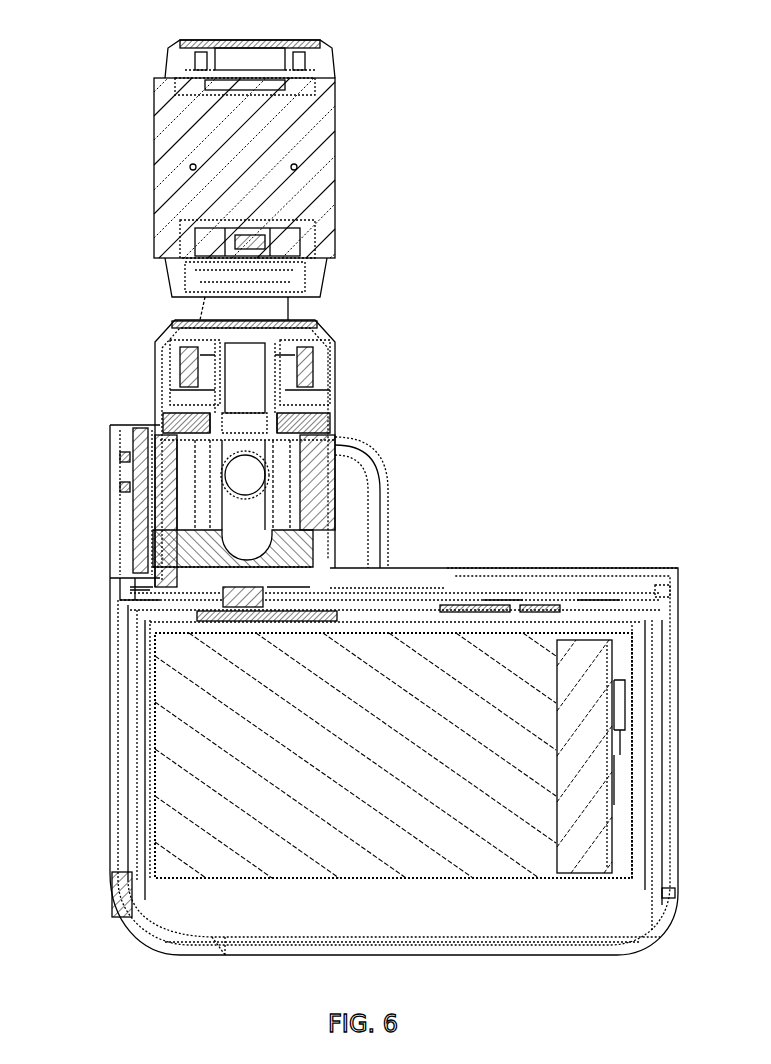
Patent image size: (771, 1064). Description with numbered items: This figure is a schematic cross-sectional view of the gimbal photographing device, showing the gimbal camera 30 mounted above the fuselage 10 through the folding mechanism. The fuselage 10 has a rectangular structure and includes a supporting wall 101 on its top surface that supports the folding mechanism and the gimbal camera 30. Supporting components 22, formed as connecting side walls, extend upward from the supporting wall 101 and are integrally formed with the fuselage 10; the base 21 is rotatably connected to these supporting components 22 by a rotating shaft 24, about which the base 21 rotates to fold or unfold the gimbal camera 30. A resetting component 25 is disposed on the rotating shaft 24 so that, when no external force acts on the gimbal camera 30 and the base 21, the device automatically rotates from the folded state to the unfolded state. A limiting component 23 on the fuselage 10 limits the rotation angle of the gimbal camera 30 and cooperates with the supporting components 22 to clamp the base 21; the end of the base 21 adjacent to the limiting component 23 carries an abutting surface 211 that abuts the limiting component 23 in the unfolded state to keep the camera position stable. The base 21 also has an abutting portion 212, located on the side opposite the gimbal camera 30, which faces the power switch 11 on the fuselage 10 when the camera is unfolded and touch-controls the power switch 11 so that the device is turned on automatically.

The fuselage 10 is at (205, 765).
The power switch 11 is at (125, 600).
The supporting wall 101 is at (493, 567).
The base 21 is at (367, 447).
The abutting surface 211 is at (110, 424).
The abutting portion 212 is at (133, 556).
The supporting components 22 is at (353, 513).
The limiting component 23 is at (127, 517).
The rotating shaft 24 is at (330, 410).
The resetting component 25 is at (118, 455).
The gimbal camera 30 is at (337, 177).